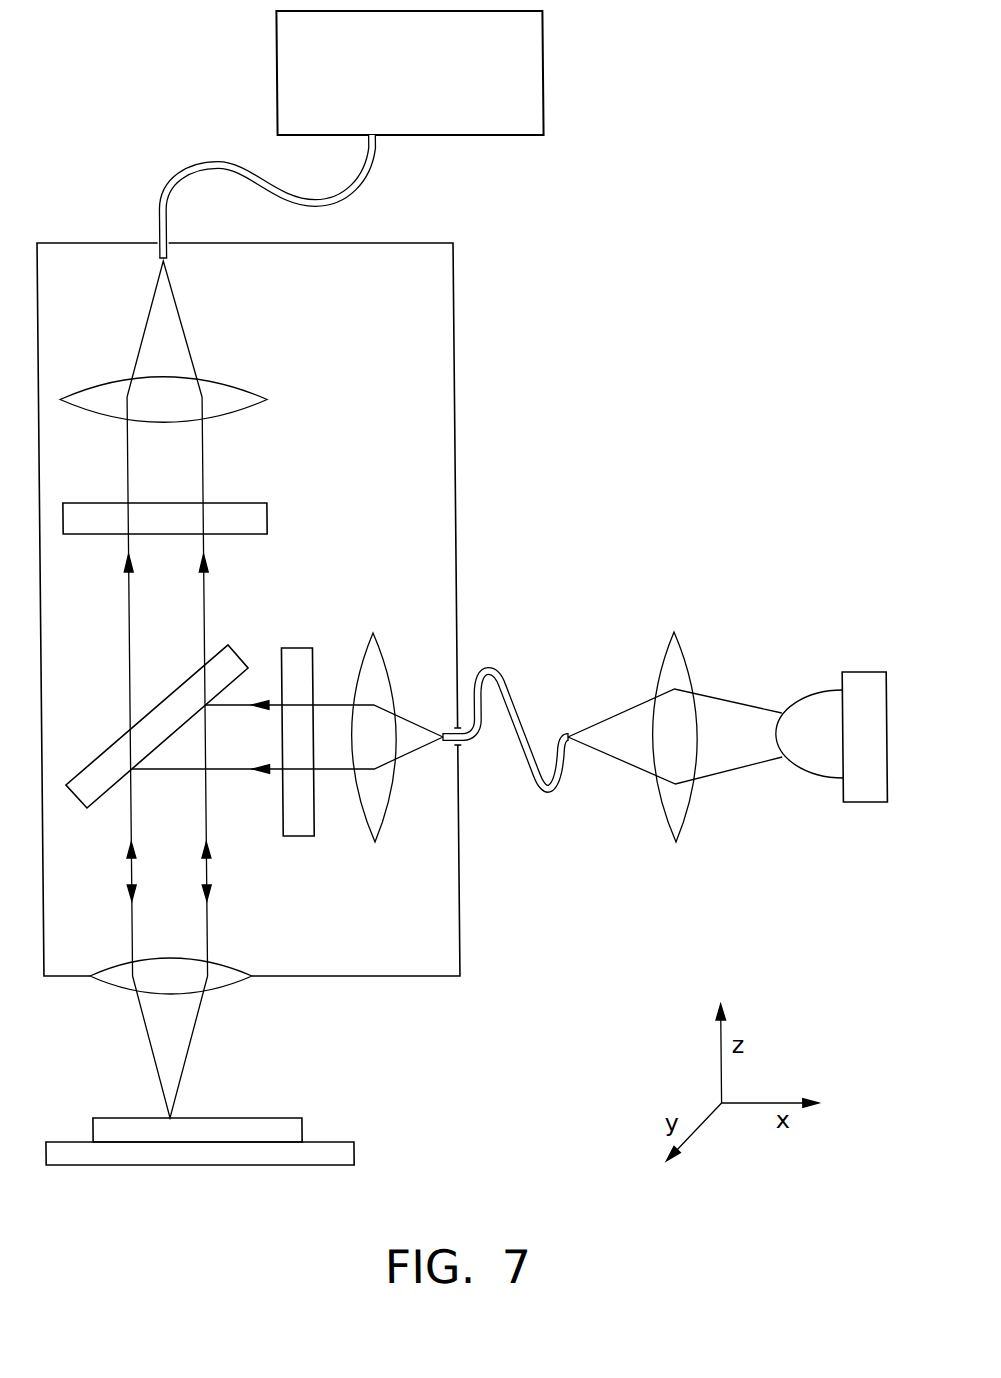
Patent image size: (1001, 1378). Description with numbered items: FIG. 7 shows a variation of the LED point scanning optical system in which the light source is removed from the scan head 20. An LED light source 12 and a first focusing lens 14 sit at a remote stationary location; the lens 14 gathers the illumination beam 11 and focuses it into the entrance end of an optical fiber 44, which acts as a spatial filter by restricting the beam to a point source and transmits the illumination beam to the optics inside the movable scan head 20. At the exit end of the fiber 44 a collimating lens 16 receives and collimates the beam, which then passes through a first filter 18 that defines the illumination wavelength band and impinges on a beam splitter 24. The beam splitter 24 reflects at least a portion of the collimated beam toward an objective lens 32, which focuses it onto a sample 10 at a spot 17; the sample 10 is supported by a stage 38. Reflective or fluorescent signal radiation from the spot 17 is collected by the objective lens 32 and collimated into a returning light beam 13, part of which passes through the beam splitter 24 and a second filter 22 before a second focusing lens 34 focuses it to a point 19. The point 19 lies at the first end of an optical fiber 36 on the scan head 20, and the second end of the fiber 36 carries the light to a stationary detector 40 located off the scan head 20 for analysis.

The sample 10 is at (280, 1118).
The illumination beam 11 is at (740, 768).
The LED light source 12 is at (822, 700).
The returning light beam 13 is at (127, 630).
The first focusing lens 14 is at (687, 634).
The collimating lens 16 is at (388, 642).
The spot 17 is at (158, 1108).
The first filter 18 is at (295, 648).
The point 19 is at (176, 268).
The scan head 20 is at (428, 242).
The second filter 22 is at (268, 518).
The beam splitter 24 is at (104, 751).
The objective lens 32 is at (248, 976).
The second focusing lens 34 is at (269, 400).
The optical fiber 36 is at (166, 188).
The stage 38 is at (73, 1168).
The detector 40 is at (548, 97).
The optical fiber 44 is at (494, 668).